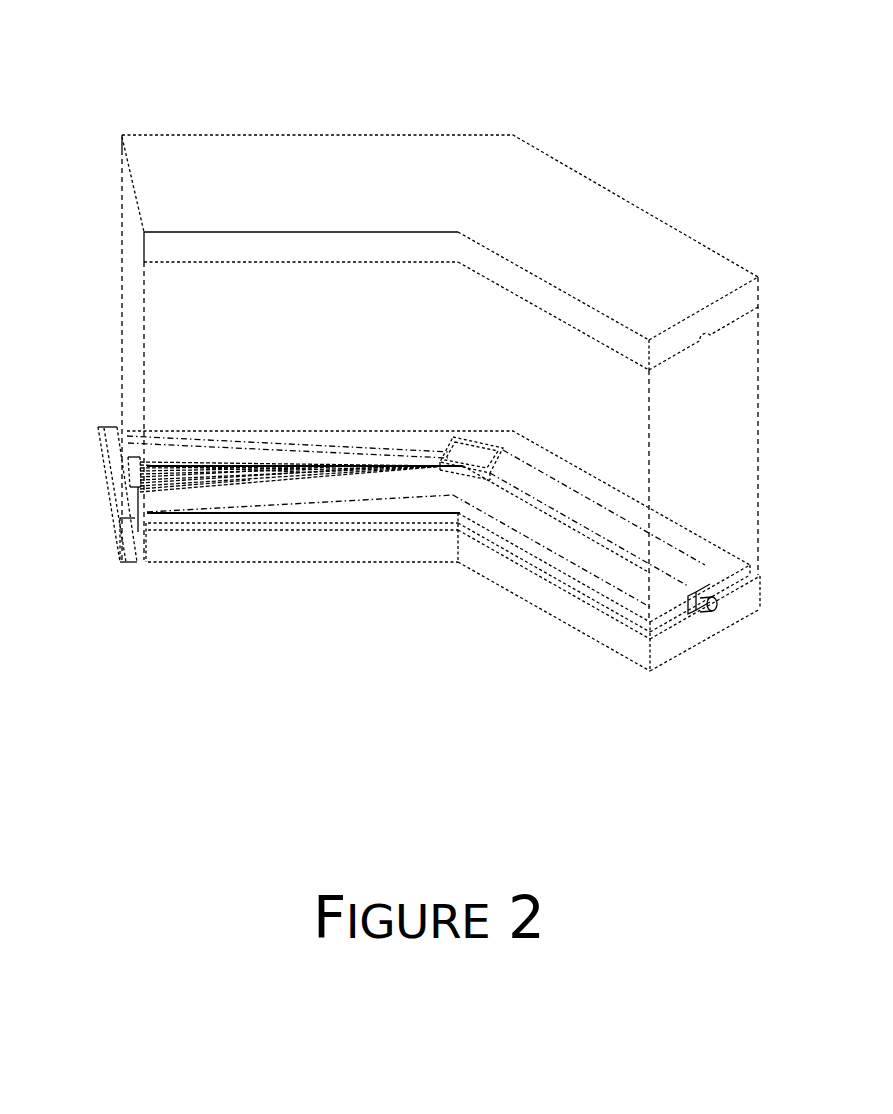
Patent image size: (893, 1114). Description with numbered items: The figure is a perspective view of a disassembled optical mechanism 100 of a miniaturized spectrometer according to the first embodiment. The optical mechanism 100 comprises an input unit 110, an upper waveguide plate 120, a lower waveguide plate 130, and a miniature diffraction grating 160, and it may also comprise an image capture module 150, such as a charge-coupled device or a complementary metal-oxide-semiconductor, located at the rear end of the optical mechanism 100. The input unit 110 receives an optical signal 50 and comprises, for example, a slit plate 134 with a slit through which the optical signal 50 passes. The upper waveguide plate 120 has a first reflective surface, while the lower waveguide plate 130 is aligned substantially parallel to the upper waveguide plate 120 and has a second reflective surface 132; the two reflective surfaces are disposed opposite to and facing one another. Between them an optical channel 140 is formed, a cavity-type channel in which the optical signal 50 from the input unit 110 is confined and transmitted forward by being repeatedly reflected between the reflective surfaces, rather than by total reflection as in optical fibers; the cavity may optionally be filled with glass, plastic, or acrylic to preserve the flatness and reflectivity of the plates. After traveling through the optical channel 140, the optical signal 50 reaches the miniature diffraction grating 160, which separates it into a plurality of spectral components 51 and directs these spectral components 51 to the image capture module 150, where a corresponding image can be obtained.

The optical mechanism 100 is at (820, 111).
The input unit 110 is at (716, 607).
The upper waveguide plate 120 is at (703, 260).
The lower waveguide plate 130 is at (598, 628).
The second reflective surface 132 is at (150, 433).
The slit plate 134 is at (690, 610).
The optical channel 140 is at (143, 504).
The image capture module 150 is at (128, 468).
The miniature diffraction grating 160 is at (473, 447).
The optical signal 50 is at (555, 515).
The spectral components 51 is at (213, 465).